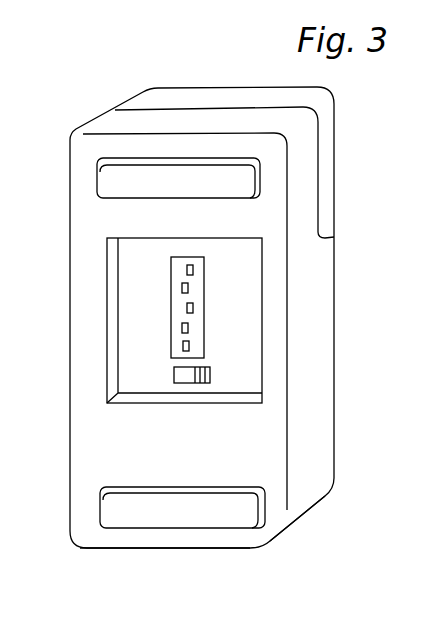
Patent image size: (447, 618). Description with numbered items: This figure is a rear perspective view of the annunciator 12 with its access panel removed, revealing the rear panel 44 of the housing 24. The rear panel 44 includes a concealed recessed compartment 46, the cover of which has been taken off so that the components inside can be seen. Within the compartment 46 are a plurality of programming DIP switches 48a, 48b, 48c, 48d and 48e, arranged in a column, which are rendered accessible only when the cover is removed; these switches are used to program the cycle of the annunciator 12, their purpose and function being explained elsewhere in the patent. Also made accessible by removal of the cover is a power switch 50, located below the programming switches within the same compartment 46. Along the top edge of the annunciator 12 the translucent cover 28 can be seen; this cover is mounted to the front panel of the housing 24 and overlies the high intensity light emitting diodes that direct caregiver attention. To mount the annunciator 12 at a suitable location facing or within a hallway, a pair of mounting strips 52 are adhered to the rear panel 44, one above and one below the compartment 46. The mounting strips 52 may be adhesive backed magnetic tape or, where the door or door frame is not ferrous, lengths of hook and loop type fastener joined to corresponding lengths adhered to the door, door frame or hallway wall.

The annunciator 12 is at (101, 120).
The translucent cover 28 is at (200, 100).
The mounting strips 52 is at (113, 183).
The concealed recessed compartment 46 is at (127, 297).
The programming DIP switch 48a is at (183, 270).
The programming DIP switch 48b is at (188, 288).
The programming DIP switch 48c is at (183, 308).
The programming DIP switch 48d is at (188, 328).
The programming DIP switch 48e is at (189, 346).
The power switch 50 is at (174, 375).
The rear panel 44 is at (87, 548).
The housing 24 is at (304, 508).